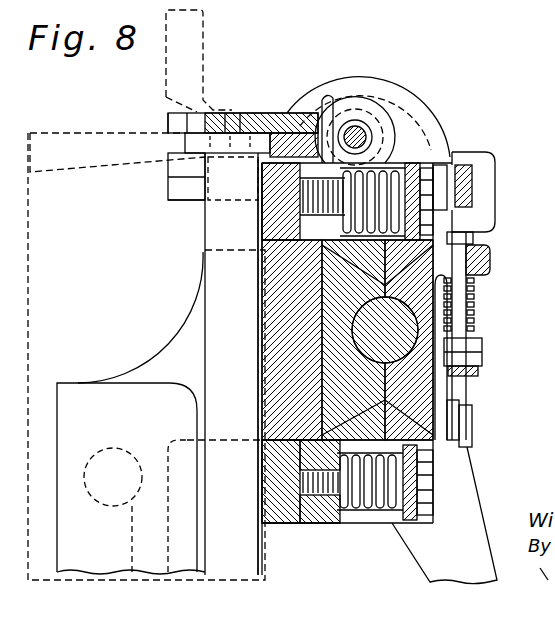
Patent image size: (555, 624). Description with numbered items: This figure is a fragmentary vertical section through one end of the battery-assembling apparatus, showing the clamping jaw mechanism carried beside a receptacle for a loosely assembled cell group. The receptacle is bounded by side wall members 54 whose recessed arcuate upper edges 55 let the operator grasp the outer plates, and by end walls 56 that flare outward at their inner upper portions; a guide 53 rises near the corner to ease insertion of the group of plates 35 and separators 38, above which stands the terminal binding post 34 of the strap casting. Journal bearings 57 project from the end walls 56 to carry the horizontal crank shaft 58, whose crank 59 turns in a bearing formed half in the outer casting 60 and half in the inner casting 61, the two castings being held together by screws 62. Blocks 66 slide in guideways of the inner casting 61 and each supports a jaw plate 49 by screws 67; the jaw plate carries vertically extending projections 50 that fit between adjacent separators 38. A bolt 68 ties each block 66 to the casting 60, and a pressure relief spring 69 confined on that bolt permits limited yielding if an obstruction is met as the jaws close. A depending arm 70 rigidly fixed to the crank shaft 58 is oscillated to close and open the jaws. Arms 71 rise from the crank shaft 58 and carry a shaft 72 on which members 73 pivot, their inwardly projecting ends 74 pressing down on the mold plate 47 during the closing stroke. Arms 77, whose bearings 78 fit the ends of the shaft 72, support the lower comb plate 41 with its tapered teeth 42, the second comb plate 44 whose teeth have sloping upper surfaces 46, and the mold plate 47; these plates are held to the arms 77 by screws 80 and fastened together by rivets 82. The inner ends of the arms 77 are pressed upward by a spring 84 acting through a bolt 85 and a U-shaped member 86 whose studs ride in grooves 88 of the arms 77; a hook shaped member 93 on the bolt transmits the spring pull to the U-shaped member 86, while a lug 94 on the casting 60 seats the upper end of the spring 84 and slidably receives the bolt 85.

The terminal binding post 34 is at (166, 70).
The plates 35 is at (44, 284).
The separators 38 is at (90, 131).
The comb plate 41 is at (330, 100).
The tapered teeth 42 is at (185, 146).
The second comb plate 44 is at (258, 113).
The upper surfaces of teeth 46 is at (243, 116).
The mold plate 47 is at (255, 113).
The jaw plates 49 is at (262, 227).
The vertically extending projections 50 is at (262, 214).
The guide 53 is at (222, 277).
The side wall members 54 is at (131, 478).
The arcuate upper edges 55 is at (138, 358).
The end walls 56 is at (287, 308).
The journal bearings 57 is at (456, 413).
The crank shaft 58 is at (275, 362).
The crank 59 is at (310, 333).
The outer casting 60 is at (458, 447).
The inner casting 61 is at (275, 398).
The screws 62 is at (458, 396).
The blocks 66 is at (270, 238).
The screws 67 is at (262, 489).
The bolt 68 is at (437, 210).
The pressure relief spring 69 is at (375, 533).
The arm 70 is at (425, 558).
The arms 71 is at (405, 110).
The shaft 72 is at (362, 131).
The members 73 is at (437, 120).
The inwardly projecting ends 74 is at (313, 105).
The arms 77 is at (185, 200).
The bearings 78 is at (547, 110).
The screws 80 is at (246, 177).
The rivets 82 is at (192, 111).
The spring 84 is at (482, 306).
The bolt 85 is at (474, 239).
The U-shaped member 86 is at (474, 183).
The grooves 88 is at (177, 180).
The hook shaped member 93 is at (486, 201).
The lug 94 is at (490, 259).